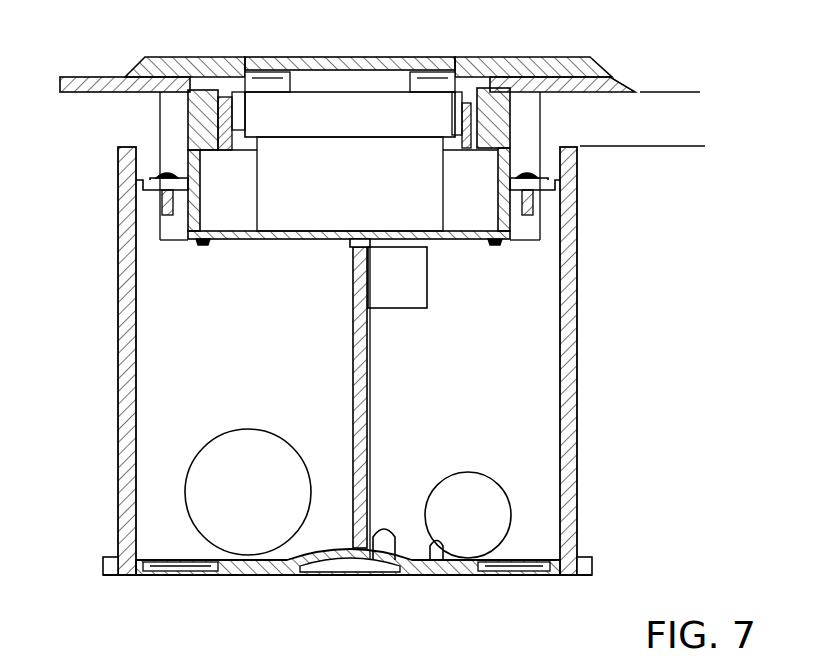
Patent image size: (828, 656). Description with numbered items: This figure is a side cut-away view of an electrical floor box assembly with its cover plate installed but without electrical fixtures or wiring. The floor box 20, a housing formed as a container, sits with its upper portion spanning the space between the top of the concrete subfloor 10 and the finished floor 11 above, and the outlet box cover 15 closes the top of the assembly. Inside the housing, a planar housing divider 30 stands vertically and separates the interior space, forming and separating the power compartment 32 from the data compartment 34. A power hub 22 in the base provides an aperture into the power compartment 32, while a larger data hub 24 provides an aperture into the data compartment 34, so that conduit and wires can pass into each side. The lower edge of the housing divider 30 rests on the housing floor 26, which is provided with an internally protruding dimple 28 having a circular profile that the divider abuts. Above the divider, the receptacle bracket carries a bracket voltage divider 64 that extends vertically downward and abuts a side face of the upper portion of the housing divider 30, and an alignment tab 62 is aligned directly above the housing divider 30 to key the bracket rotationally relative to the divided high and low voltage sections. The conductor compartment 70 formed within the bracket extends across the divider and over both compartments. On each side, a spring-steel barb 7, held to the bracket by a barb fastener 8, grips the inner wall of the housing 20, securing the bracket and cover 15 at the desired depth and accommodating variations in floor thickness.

The barb 7 is at (140, 222).
The barb fastener 8 is at (533, 215).
The concrete subfloor 10 is at (638, 146).
The finished floor 11 is at (648, 92).
The outlet box cover 15 is at (305, 56).
The floor box 20 is at (118, 486).
The power hub 22 is at (487, 525).
The data hub 24 is at (257, 515).
The housing floor 26 is at (435, 540).
The dimple 28 is at (394, 530).
The housing divider 30 is at (353, 355).
The power compartment 32 is at (495, 381).
The data compartment 34 is at (175, 448).
The alignment tab 62 is at (353, 245).
The bracket voltage divider 64 is at (372, 282).
The conductor compartment 70 is at (360, 115).